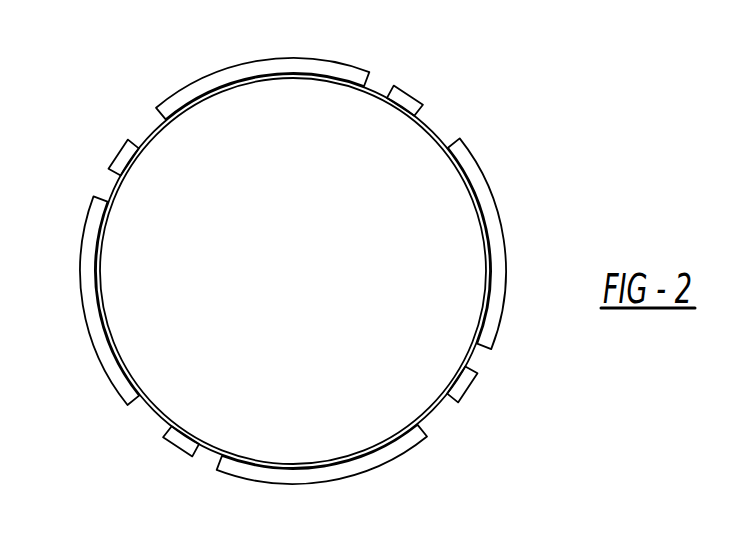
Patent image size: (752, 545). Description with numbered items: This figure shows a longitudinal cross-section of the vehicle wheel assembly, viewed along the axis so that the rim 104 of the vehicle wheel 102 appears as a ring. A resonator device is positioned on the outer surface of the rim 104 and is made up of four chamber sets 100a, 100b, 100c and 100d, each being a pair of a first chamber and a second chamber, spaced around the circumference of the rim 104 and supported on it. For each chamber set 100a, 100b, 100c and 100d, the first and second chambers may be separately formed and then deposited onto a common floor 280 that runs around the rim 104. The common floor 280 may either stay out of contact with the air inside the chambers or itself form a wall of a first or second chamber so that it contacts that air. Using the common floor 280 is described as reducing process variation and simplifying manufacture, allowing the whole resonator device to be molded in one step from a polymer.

The chamber set 100a is at (415, 79).
The chamber set 100b is at (512, 332).
The chamber set 100c is at (234, 490).
The chamber set 100d is at (99, 153).
The common floor 280 is at (310, 277).
The vehicle wheel 102 is at (128, 446).
The rim 104 is at (477, 442).